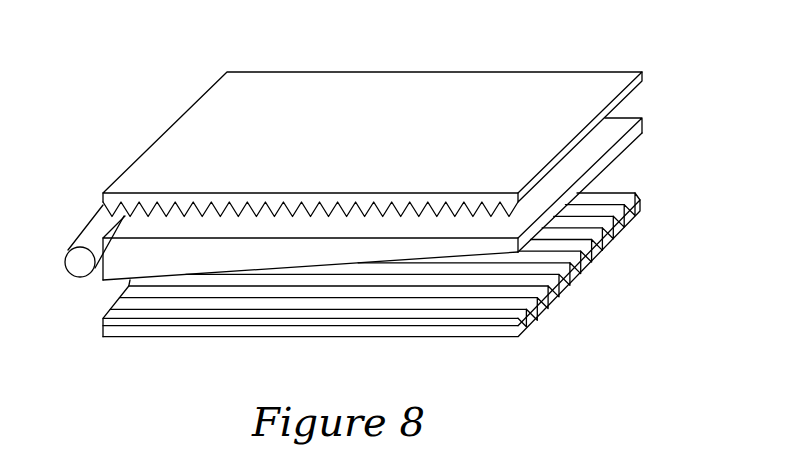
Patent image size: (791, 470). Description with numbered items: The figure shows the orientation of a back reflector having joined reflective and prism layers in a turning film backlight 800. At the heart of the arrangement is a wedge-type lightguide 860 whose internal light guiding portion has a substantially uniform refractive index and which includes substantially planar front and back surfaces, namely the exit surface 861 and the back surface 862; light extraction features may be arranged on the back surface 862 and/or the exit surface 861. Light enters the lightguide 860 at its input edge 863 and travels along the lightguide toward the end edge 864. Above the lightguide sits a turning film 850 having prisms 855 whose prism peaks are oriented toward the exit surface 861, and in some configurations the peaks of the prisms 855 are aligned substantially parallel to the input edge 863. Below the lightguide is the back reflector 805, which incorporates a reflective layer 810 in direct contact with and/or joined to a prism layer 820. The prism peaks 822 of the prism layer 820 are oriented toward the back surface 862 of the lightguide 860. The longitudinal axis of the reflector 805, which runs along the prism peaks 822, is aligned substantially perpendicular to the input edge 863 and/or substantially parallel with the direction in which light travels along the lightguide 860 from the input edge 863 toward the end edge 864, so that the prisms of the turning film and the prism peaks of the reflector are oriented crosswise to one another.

The backlight 800 is at (208, 44).
The back reflector 805 is at (107, 319).
The reflective layer 810 is at (548, 301).
The prism layer 820 is at (492, 310).
The prism peaks 822 is at (614, 197).
The turning film 850 is at (573, 83).
The prisms 855 is at (163, 209).
The wedge-type lightguide 860 is at (187, 260).
The exit surface 861 is at (610, 126).
The back surface 862 is at (404, 264).
The input edge 863 is at (92, 278).
The end edge 864 is at (624, 146).